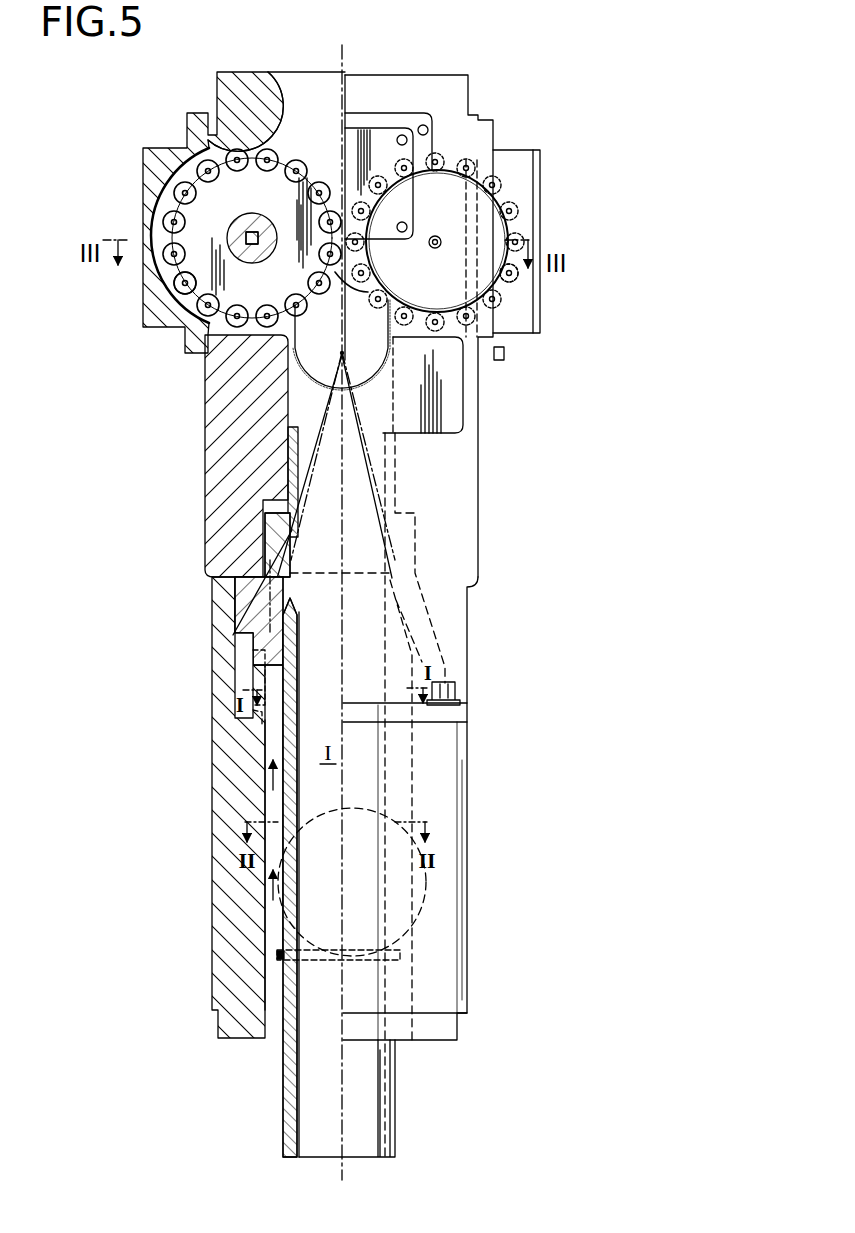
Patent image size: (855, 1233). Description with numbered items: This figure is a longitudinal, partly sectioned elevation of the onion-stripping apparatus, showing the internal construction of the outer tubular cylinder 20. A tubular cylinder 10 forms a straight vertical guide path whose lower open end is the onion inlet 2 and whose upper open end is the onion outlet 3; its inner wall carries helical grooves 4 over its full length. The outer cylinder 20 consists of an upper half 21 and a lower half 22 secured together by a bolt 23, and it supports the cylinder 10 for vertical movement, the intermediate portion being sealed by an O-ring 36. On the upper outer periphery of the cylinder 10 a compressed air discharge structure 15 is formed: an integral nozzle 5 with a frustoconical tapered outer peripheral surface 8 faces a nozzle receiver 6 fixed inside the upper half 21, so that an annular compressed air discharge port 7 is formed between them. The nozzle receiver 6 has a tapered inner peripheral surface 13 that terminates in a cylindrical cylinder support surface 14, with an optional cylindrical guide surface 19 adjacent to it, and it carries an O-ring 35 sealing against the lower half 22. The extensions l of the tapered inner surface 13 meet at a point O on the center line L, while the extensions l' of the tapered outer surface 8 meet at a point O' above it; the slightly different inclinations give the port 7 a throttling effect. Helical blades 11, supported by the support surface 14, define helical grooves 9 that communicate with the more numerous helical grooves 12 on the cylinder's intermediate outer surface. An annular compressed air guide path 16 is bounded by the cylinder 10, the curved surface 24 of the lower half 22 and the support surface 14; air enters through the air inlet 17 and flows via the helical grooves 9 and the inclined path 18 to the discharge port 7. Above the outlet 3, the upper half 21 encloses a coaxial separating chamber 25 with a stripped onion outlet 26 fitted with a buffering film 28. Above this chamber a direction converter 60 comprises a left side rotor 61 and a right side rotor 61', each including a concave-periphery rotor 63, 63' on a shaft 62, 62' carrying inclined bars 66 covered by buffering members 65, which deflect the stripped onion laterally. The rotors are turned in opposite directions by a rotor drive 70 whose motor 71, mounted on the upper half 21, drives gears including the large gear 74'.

The onion inlet 2 is at (310, 1160).
The onion outlet 3 is at (340, 575).
The helical grooves 4 is at (298, 692).
The nozzle 5 is at (292, 625).
The nozzle receiver 6 is at (275, 545).
The compressed air discharge port 7 is at (298, 562).
The tapered outer peripheral surface 8 is at (292, 592).
The helical grooves 9 is at (273, 808).
The tubular cylinder 10 is at (270, 845).
The helical blades 11 is at (243, 712).
The helical grooves 12 is at (280, 905).
The tapered inner peripheral surface 13 is at (240, 595).
The cylinder support surface 14 is at (250, 745).
The compressed air discharge structure 15 is at (252, 615).
The annular compressed air guide path 16 is at (263, 790).
The air inlet 17 is at (353, 806).
The inclined path 18 is at (280, 640).
The cylindrical guide surface 19 is at (290, 460).
The outer tubular cylinder 20 is at (484, 624).
The upper half 21 is at (479, 470).
The lower half 22 is at (468, 770).
The bolt 23 is at (456, 690).
The curved surface 24 is at (270, 880).
The separating chamber 25 is at (300, 400).
The stripped onion outlet 26 is at (260, 360).
The buffering film 28 is at (300, 340).
The O-ring 35 is at (243, 660).
The O-ring 36 is at (278, 955).
The direction converter 60 is at (305, 158).
The left side rotor 61 is at (171, 200).
The shaft 62 is at (254, 257).
The rotor 63 is at (245, 93).
The buffering members 65 is at (168, 280).
The bars 66 is at (190, 285).
The rotor drive 70 is at (410, 95).
The motor 71 is at (378, 115).
The right side rotor 61' is at (442, 203).
The shaft 62' is at (425, 262).
The rotor 63' is at (470, 241).
The large gear 74' is at (533, 318).
The point of intersection O' is at (357, 335).
The point of intersection O is at (367, 400).
The center line L is at (343, 540).
The extensions l is at (359, 486).
The extensions l' is at (357, 410).